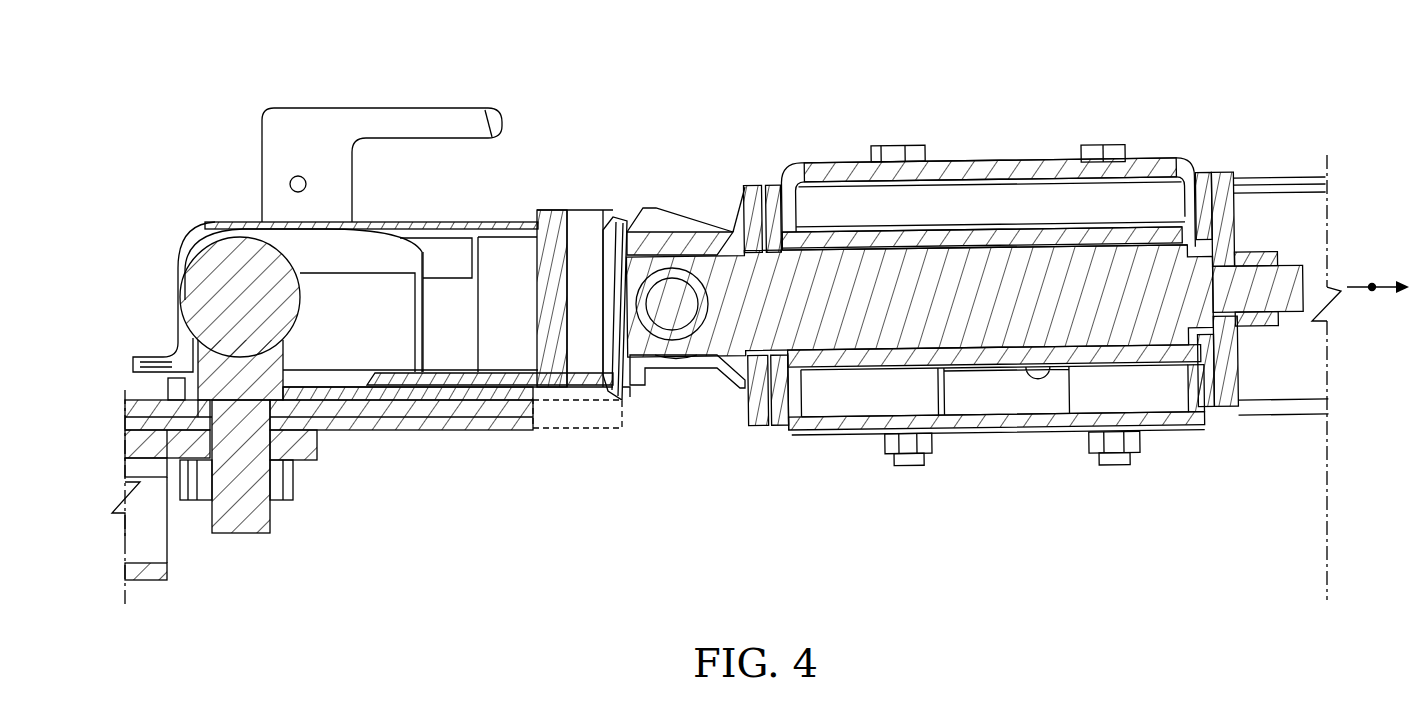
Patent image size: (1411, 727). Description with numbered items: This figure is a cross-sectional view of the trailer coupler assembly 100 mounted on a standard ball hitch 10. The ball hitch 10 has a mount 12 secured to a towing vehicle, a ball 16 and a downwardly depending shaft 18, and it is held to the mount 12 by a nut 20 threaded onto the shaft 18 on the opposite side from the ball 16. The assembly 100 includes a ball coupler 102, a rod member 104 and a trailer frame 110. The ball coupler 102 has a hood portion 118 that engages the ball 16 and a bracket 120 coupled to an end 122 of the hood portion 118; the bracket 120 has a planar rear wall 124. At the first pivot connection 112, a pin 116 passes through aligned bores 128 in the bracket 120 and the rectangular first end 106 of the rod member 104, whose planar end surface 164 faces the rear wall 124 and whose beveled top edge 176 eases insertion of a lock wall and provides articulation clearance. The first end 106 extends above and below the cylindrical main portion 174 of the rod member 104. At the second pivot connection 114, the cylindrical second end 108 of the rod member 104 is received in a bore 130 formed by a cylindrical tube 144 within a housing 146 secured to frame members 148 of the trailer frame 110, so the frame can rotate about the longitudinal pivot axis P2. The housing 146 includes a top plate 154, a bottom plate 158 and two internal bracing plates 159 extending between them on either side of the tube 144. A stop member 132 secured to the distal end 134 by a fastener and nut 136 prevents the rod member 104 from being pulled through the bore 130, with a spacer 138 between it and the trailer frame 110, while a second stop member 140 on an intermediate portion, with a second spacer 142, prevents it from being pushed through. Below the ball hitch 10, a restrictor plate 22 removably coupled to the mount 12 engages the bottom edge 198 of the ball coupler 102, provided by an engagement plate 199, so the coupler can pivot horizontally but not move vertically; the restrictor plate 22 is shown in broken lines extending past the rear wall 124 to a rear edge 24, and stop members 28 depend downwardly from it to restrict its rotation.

The ball hitch 10 is at (108, 375).
The mount 12 is at (137, 413).
The ball 16 is at (205, 292).
The shaft 18 is at (238, 528).
The nut 20 is at (295, 502).
The restrictor plate 22 is at (348, 423).
The rear edge 24 is at (623, 418).
The stop members 28 is at (167, 467).
The trailer coupler assembly 100 is at (735, 62).
The ball coupler 102 is at (248, 222).
The rod member 104 is at (1032, 267).
The first end 106 is at (767, 420).
The second end 108 is at (1127, 318).
The trailer frame 110 is at (1307, 180).
The first pivot connection 112 is at (562, 68).
The second pivot connection 114 is at (1103, 398).
The pin 116 is at (660, 317).
The hood portion 118 is at (188, 240).
The bracket 120 is at (546, 240).
The end 122 is at (432, 238).
The rear wall 124 is at (551, 238).
The bores 128 is at (700, 316).
The bore 130 is at (933, 277).
The stop member 132 is at (1223, 172).
The distal end 134 is at (1220, 413).
The fastener and nut 136 is at (1288, 290).
The spacer 138 is at (1207, 182).
The second stop member 140 is at (747, 187).
The second spacer 142 is at (775, 190).
The cylindrical tube 144 is at (868, 240).
The housing 146 is at (1150, 162).
The frame members 148 is at (1323, 187).
The top plate 154 is at (1058, 162).
The bottom plate 158 is at (993, 417).
The internal bracing plates 159 is at (837, 405).
The end surface 164 is at (650, 218).
The cylindrical main portion 174 is at (932, 260).
The top edge 176 is at (610, 222).
The bottom edge 198 is at (463, 387).
The engagement plate 199 is at (403, 380).
The pivot axis P2 is at (1373, 291).